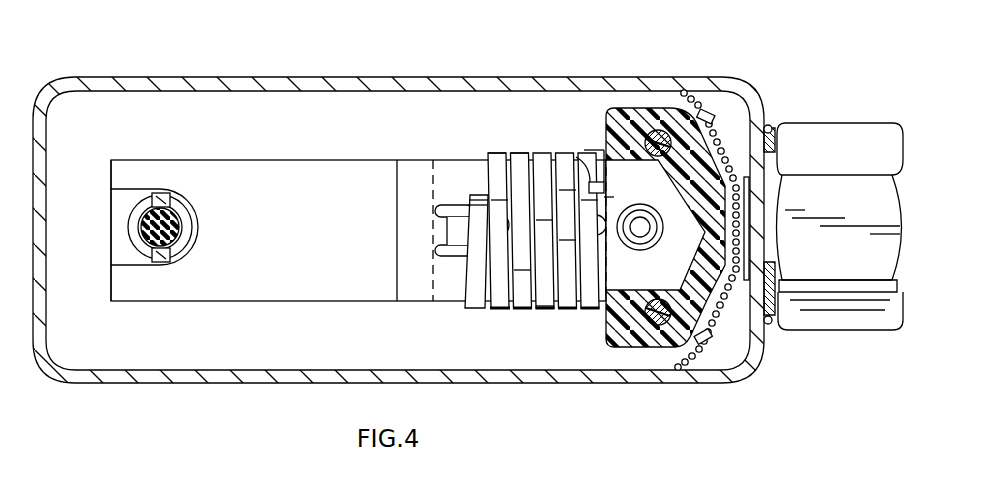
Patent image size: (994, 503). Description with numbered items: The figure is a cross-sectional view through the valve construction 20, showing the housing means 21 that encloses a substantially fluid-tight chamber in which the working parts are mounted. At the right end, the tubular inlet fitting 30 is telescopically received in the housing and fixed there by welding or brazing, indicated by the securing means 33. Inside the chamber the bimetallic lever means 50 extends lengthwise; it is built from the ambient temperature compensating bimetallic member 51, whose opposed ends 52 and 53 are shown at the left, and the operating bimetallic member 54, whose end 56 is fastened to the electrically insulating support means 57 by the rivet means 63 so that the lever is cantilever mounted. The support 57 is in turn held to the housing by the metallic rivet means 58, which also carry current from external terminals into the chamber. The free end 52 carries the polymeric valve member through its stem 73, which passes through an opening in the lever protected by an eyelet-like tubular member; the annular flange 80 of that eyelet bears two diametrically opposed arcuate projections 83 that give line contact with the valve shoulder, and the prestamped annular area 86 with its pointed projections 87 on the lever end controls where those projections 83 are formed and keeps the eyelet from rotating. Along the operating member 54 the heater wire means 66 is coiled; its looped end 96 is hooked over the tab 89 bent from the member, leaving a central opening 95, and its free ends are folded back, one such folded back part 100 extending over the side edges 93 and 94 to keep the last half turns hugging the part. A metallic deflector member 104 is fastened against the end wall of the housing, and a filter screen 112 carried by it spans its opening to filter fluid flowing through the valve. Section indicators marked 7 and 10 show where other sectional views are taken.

The section line 7- 7 is at (628, 43).
The section line 10- 10 is at (127, 128).
The valve construction 20 is at (344, 36).
The housing means 21 is at (185, 385).
The tubular inlet fitting 30 is at (843, 122).
The securing means 33 is at (767, 124).
The bimetallic lever means 50 is at (335, 157).
The ambient temperature compensating bimetallic member 51 is at (310, 303).
The end of bimetallic member 52 is at (125, 303).
The end of bimetallic member 53 is at (377, 290).
The operating bimetallic member 54 is at (517, 130).
The end of operating bimetallic member 56 is at (450, 160).
The electrically insulating support means 57 is at (632, 343).
The metallic rivet means 58 is at (658, 130).
The rivet means 63 is at (638, 244).
The heater wire means 66 is at (548, 315).
The stem 73 is at (185, 222).
The annular flange 80 is at (130, 225).
The arcuate projections 83 is at (150, 200).
The annular area 86 is at (118, 205).
The pointed projections 87 is at (178, 190).
The tab 89 is at (460, 228).
The side edge 93 is at (460, 302).
The side edge 94 is at (473, 157).
The central opening 95 is at (604, 197).
The looped end 96 is at (473, 193).
The folded back part 100 is at (590, 185).
The deflector member 104 is at (747, 203).
The filter screen 112 is at (697, 100).